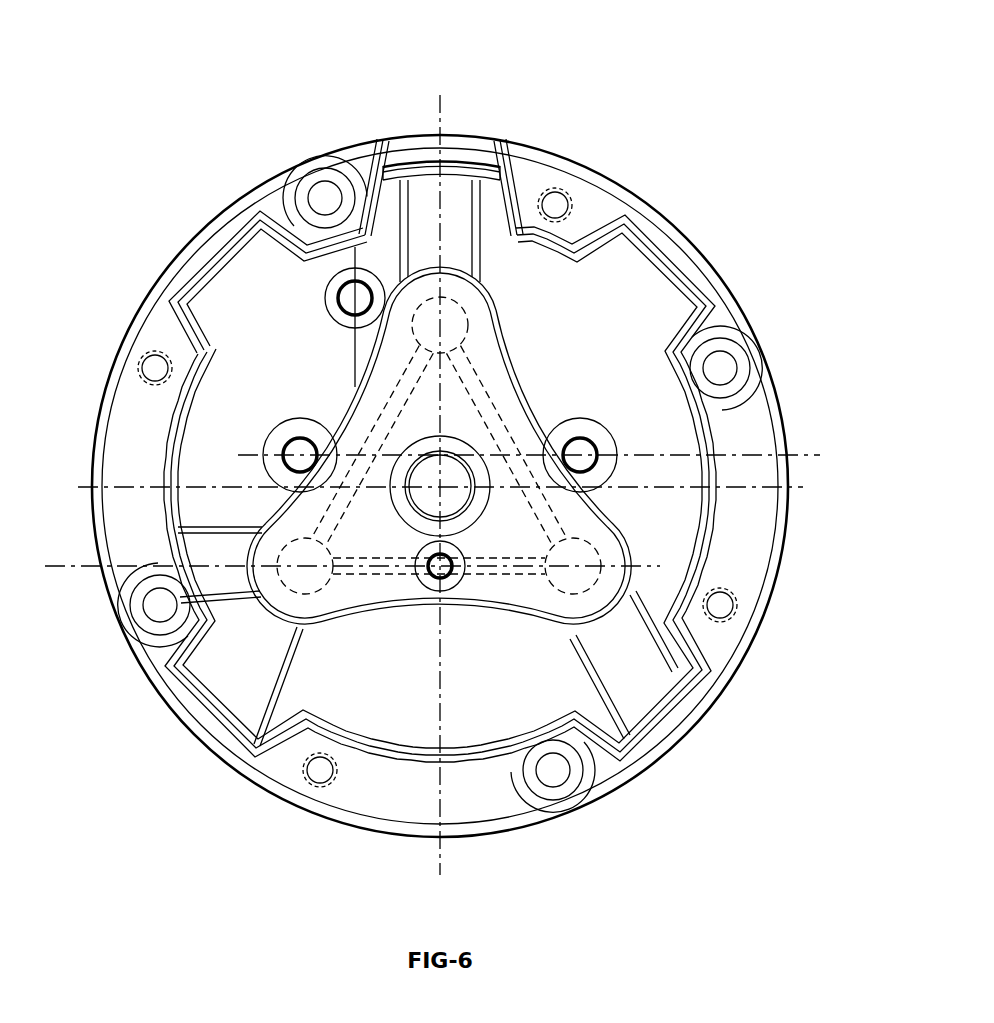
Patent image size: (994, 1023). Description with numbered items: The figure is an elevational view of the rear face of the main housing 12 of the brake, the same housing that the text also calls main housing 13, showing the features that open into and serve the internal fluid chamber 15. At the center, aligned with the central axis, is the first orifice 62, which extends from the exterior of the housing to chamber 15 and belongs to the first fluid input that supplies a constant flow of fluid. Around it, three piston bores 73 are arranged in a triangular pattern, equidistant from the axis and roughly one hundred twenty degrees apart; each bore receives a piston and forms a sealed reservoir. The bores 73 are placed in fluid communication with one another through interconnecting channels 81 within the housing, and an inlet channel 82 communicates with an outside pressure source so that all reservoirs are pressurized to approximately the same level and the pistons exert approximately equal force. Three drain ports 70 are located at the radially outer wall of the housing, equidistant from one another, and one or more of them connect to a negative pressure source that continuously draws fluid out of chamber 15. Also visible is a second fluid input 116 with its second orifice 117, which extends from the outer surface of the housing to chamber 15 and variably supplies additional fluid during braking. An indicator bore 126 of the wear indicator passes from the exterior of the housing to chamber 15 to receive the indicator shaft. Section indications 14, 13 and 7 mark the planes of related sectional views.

The main housing 12 is at (632, 168).
The drain port 70 is at (442, 95).
The indicator bore 126 is at (345, 290).
The chamber 15 is at (402, 387).
The piston bore 73 is at (462, 292).
The second orifice 117 is at (298, 447).
The interconnecting channel 81 is at (372, 437).
The second fluid input 116 is at (577, 418).
The first orifice 62 is at (456, 470).
The inlet channel 82 is at (434, 577).
The section line 14 is at (820, 398).
The main housing 13 is at (365, 455).
The section line 7 is at (660, 510).